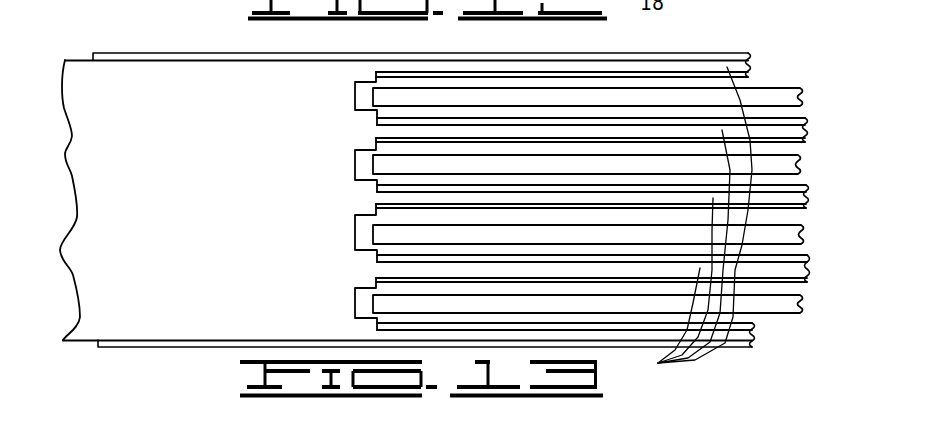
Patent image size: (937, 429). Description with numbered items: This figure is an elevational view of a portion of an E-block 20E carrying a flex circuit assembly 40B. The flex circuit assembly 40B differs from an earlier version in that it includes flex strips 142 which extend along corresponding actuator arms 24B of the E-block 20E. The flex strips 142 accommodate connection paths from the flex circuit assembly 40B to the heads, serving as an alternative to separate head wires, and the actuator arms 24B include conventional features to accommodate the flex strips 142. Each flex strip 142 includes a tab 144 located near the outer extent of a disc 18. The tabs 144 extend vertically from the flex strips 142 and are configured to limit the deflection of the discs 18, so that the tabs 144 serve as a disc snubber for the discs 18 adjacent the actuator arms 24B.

The flex circuit assembly 40B is at (82, 50).
The E-block 20E is at (172, 40).
The actuator arms 24B is at (628, 322).
The discs 18 is at (780, 95).
The tabs 144 is at (355, 114).
The flex strips 142 is at (683, 222).